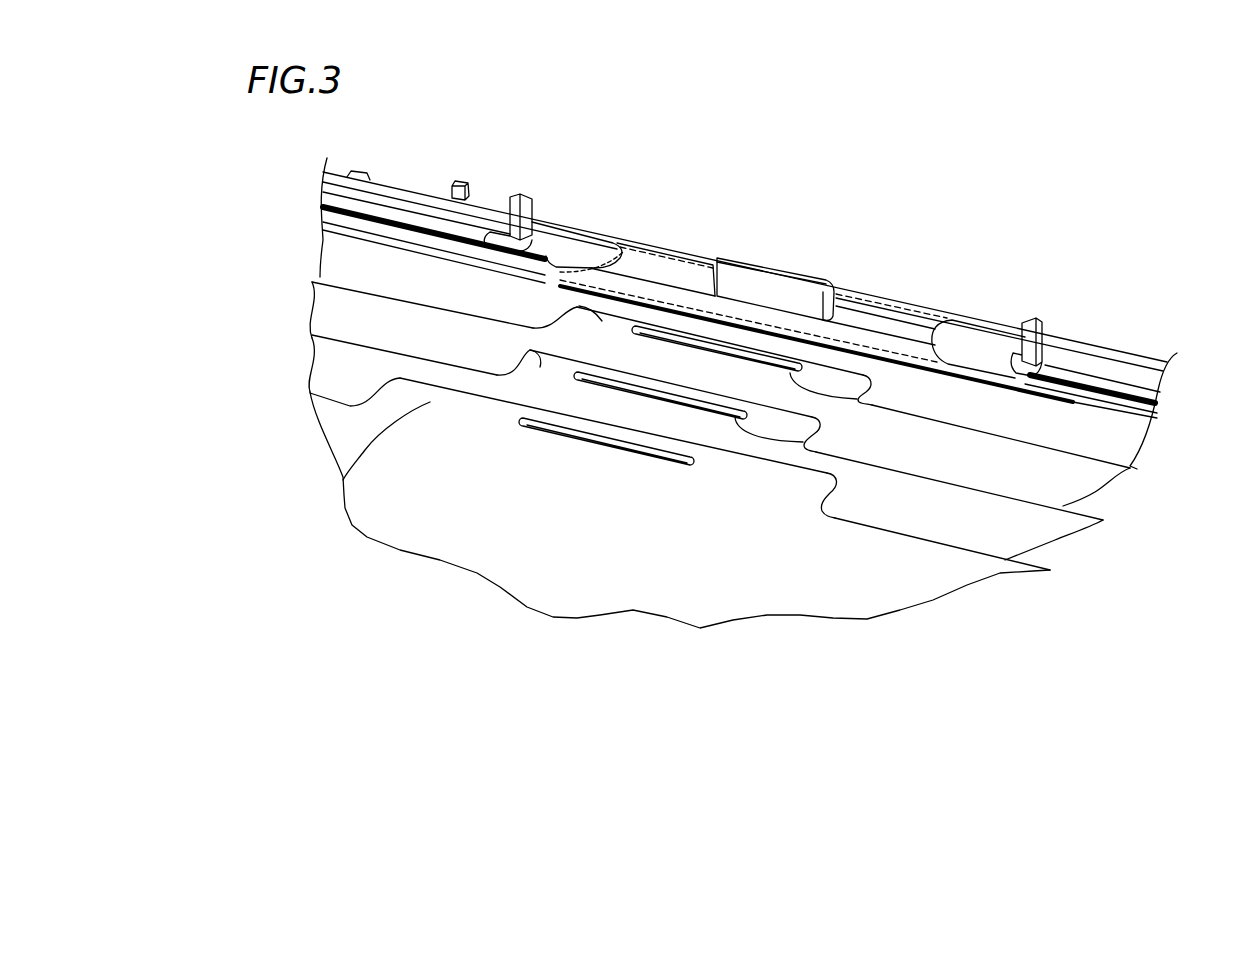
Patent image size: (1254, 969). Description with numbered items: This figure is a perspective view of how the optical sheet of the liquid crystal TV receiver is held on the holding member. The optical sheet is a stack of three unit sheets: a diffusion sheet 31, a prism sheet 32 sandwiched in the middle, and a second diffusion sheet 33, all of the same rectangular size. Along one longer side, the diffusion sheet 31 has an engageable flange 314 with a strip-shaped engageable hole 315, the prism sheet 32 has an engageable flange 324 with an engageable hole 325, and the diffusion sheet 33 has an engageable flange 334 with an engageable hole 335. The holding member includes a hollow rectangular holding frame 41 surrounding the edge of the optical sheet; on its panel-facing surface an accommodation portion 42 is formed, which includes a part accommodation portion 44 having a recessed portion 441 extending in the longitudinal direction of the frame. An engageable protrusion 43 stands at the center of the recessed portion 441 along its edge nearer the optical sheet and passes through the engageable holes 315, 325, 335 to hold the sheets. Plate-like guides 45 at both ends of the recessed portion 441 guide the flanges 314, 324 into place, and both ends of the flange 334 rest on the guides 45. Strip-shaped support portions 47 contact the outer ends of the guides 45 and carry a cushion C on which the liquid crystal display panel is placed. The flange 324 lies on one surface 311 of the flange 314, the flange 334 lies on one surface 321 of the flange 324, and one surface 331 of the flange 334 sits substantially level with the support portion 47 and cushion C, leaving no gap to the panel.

The holding frame 41 is at (880, 221).
The cushion C is at (412, 215).
The support portion 47 is at (500, 232).
The guide 45 is at (572, 250).
The accommodation portion 42 is at (667, 232).
The part accommodation portion 44 is at (697, 254).
The recessed portion 441 is at (884, 318).
The engageable protrusion 43 is at (780, 272).
The diffusion sheet 31 is at (327, 302).
The one surface of the engageable flange 311 is at (577, 307).
The engageable flange 314 is at (868, 376).
The engageable hole 315 is at (868, 399).
The prism sheet 32 is at (328, 364).
The one surface of the engageable flange 321 is at (530, 350).
The engageable flange 324 is at (816, 419).
The engageable hole 325 is at (810, 447).
The diffusion sheet 33 is at (328, 423).
The one surface of the engageable flange 331 is at (345, 475).
The engageable flange 334 is at (835, 476).
The engageable hole 335 is at (617, 450).